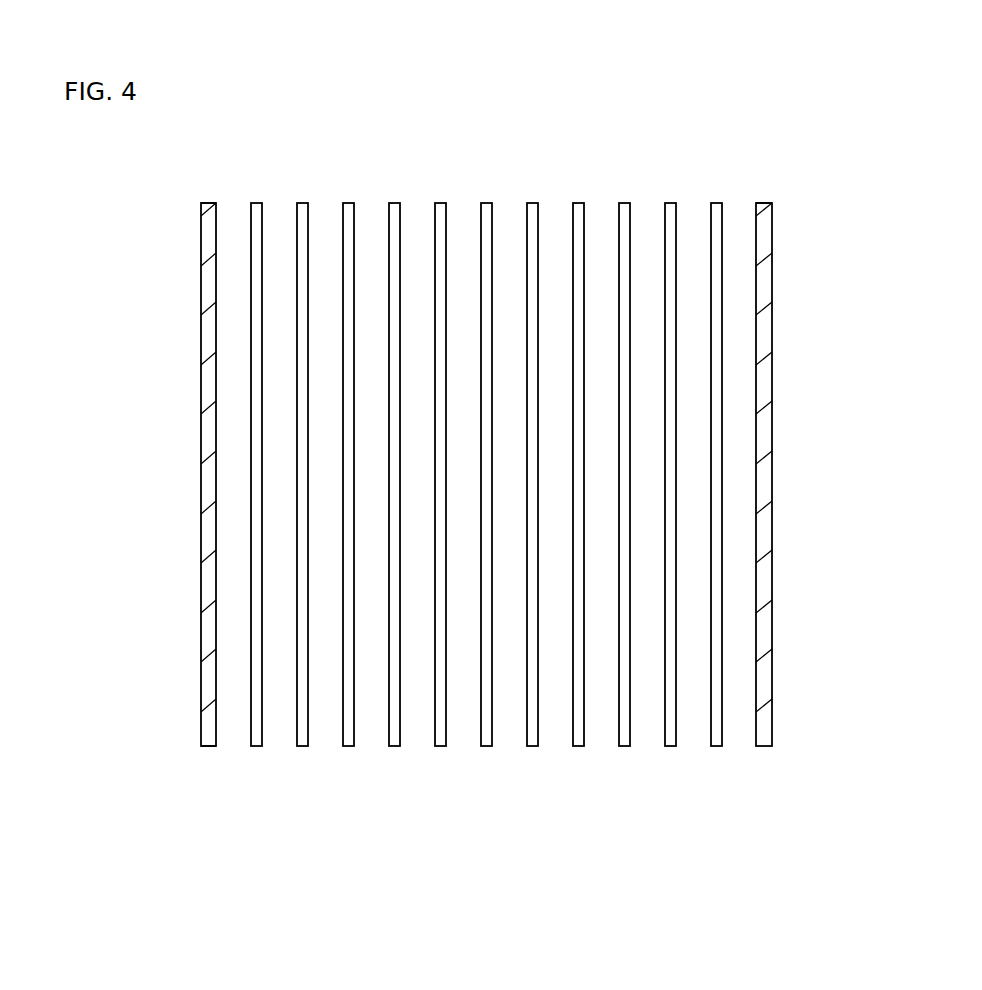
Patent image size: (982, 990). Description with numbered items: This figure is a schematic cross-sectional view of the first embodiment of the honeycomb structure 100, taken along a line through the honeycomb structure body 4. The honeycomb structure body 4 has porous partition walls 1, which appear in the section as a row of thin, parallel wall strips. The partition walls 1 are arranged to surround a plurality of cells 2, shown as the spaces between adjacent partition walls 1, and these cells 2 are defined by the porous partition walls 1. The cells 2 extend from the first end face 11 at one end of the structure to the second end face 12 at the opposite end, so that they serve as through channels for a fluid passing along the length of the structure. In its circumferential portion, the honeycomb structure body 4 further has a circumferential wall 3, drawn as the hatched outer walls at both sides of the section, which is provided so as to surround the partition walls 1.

The honeycomb structure 100 is at (856, 108).
The partition walls 1 is at (667, 230).
The cells 2 is at (595, 263).
The circumferential wall 3 is at (210, 370).
The honeycomb structure body 4 is at (779, 211).
The first end face 11 is at (227, 184).
The second end face 12 is at (240, 761).